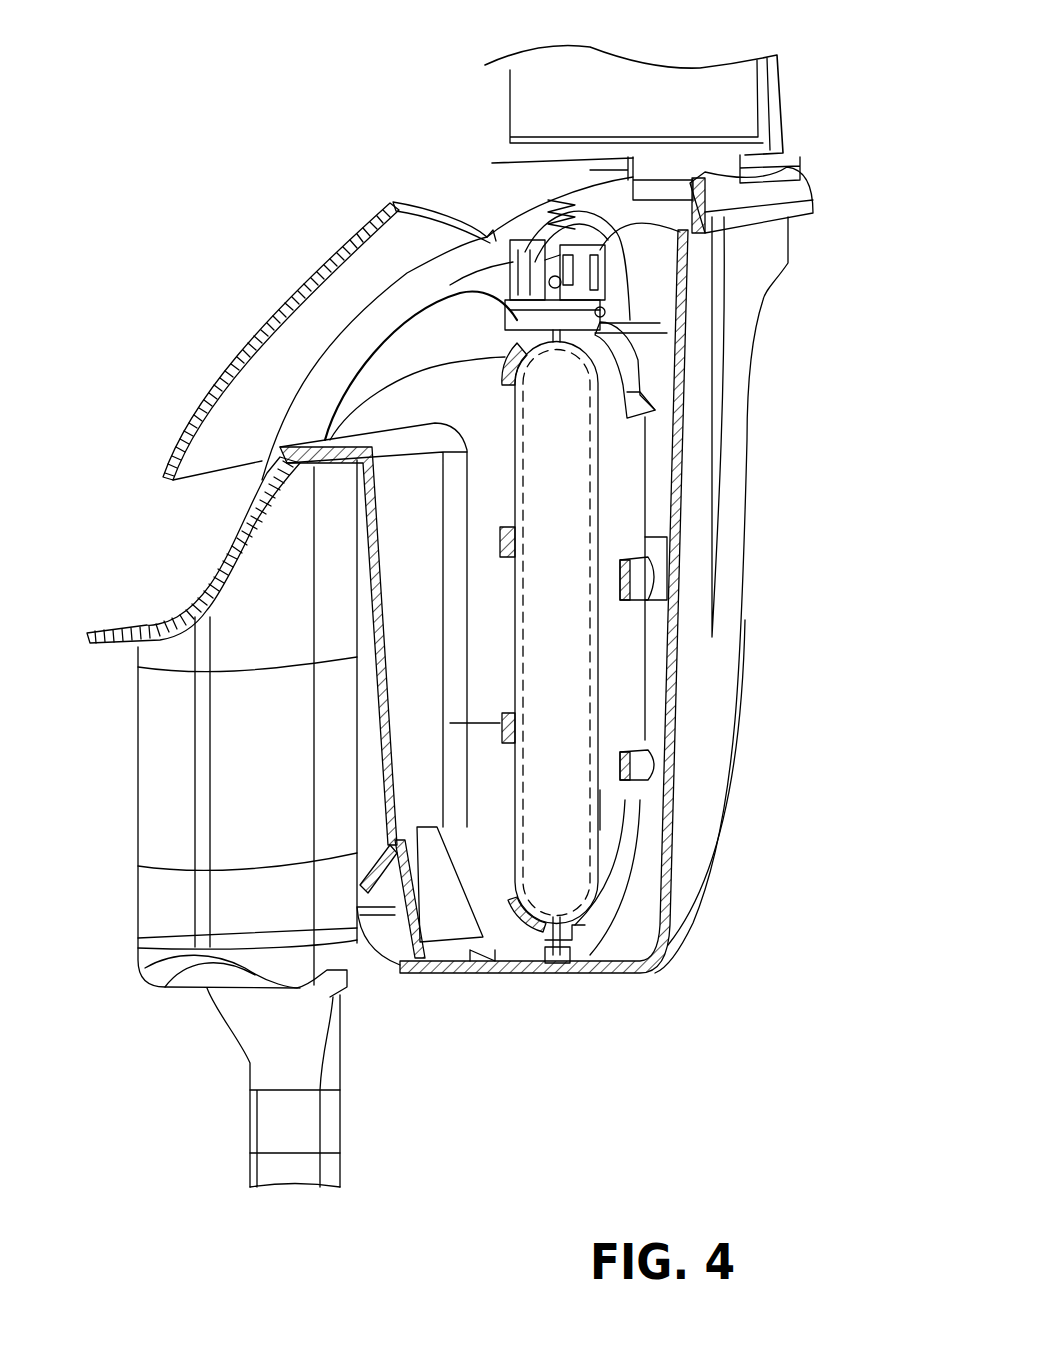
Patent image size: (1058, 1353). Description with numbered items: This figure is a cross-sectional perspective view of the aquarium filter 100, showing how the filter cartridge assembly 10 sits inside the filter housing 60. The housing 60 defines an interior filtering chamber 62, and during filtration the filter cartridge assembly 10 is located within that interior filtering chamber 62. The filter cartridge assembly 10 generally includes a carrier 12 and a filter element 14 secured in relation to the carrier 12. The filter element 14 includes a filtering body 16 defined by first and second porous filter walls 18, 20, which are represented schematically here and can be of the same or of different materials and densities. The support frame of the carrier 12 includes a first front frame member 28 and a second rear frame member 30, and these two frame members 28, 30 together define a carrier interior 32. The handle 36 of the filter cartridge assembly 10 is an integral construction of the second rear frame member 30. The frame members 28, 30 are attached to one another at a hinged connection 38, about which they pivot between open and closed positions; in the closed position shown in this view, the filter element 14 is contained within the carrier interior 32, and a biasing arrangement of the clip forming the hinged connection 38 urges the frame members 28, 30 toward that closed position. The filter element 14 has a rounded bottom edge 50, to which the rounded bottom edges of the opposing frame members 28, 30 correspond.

The aquarium filter 100 is at (323, 177).
The filter cartridge assembly 10 is at (615, 243).
The carrier 12 is at (530, 940).
The filter element 14 is at (627, 502).
The filtering body 16 is at (628, 725).
The first porous filter wall 18 is at (628, 680).
The second porous filter wall 20 is at (767, 245).
The first front frame member 28 is at (501, 370).
The second rear frame member 30 is at (640, 370).
The carrier interior 32 is at (613, 790).
The handle 36 is at (580, 217).
The hinged connection 38 is at (530, 265).
The rounded bottom edge 50 is at (577, 927).
The filter housing 60 is at (735, 437).
The interior filtering chamber 62 is at (473, 599).